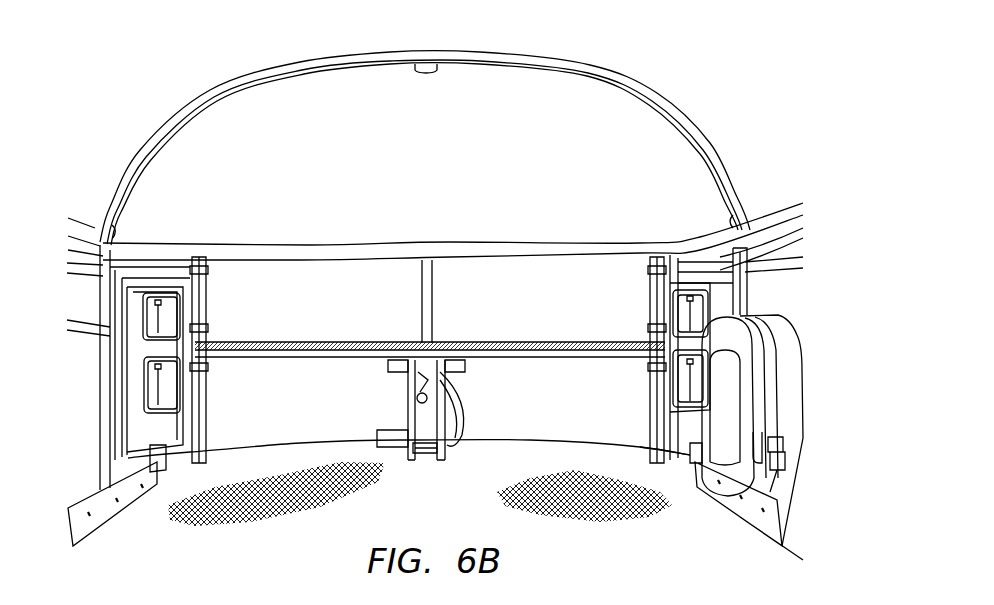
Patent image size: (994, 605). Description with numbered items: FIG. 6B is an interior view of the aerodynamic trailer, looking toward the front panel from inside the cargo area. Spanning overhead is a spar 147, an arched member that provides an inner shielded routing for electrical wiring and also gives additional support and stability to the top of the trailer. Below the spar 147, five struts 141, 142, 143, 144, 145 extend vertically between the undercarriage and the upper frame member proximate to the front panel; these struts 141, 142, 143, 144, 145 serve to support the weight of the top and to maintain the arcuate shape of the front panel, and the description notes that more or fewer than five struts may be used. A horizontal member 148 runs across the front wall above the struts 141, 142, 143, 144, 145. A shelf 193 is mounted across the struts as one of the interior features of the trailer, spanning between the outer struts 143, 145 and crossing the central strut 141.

The strut 141 is at (432, 289).
The strut 142 is at (103, 256).
The strut 143 is at (188, 294).
The strut 144 is at (744, 276).
The strut 145 is at (663, 261).
The spar 147 is at (209, 101).
The rail 148 is at (536, 244).
The shelf 193 is at (359, 341).